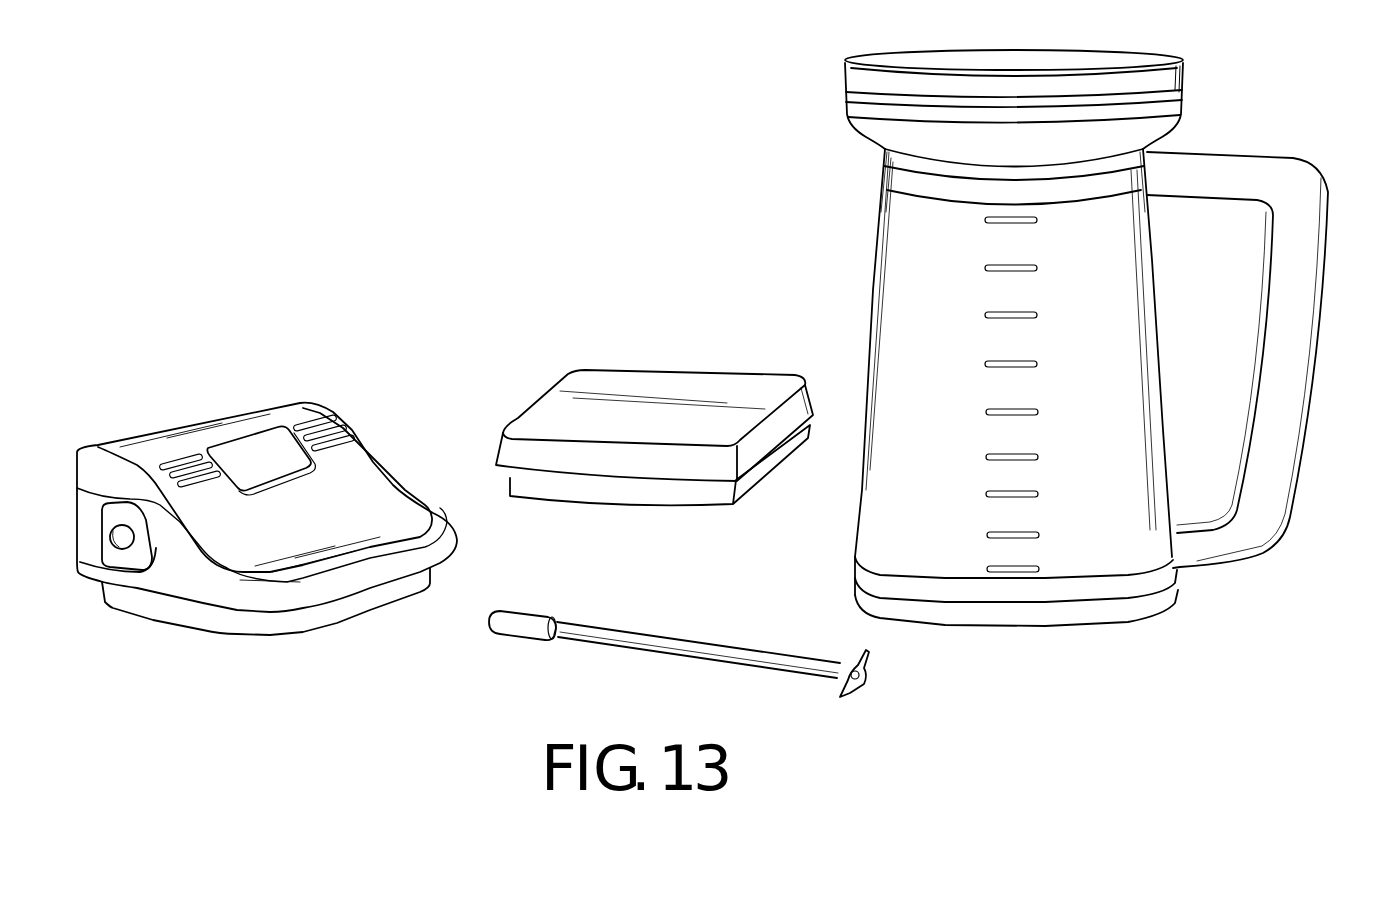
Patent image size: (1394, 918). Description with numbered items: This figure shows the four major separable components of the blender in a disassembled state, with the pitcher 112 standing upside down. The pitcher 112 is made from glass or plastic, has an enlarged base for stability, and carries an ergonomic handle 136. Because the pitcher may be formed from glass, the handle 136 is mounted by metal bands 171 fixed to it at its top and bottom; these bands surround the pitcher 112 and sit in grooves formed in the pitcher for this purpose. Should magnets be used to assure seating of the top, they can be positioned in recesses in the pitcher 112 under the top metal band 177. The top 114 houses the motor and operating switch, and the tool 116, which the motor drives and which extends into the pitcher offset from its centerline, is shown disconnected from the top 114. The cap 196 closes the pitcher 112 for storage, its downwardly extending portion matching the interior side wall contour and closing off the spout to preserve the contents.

The pitcher 112 is at (903, 257).
The metal bands 171 is at (903, 183).
The top metal band 177 is at (1081, 592).
The handle 136 is at (1277, 445).
The cap 196 is at (695, 377).
The top 114 is at (212, 416).
The tool 116 is at (690, 650).